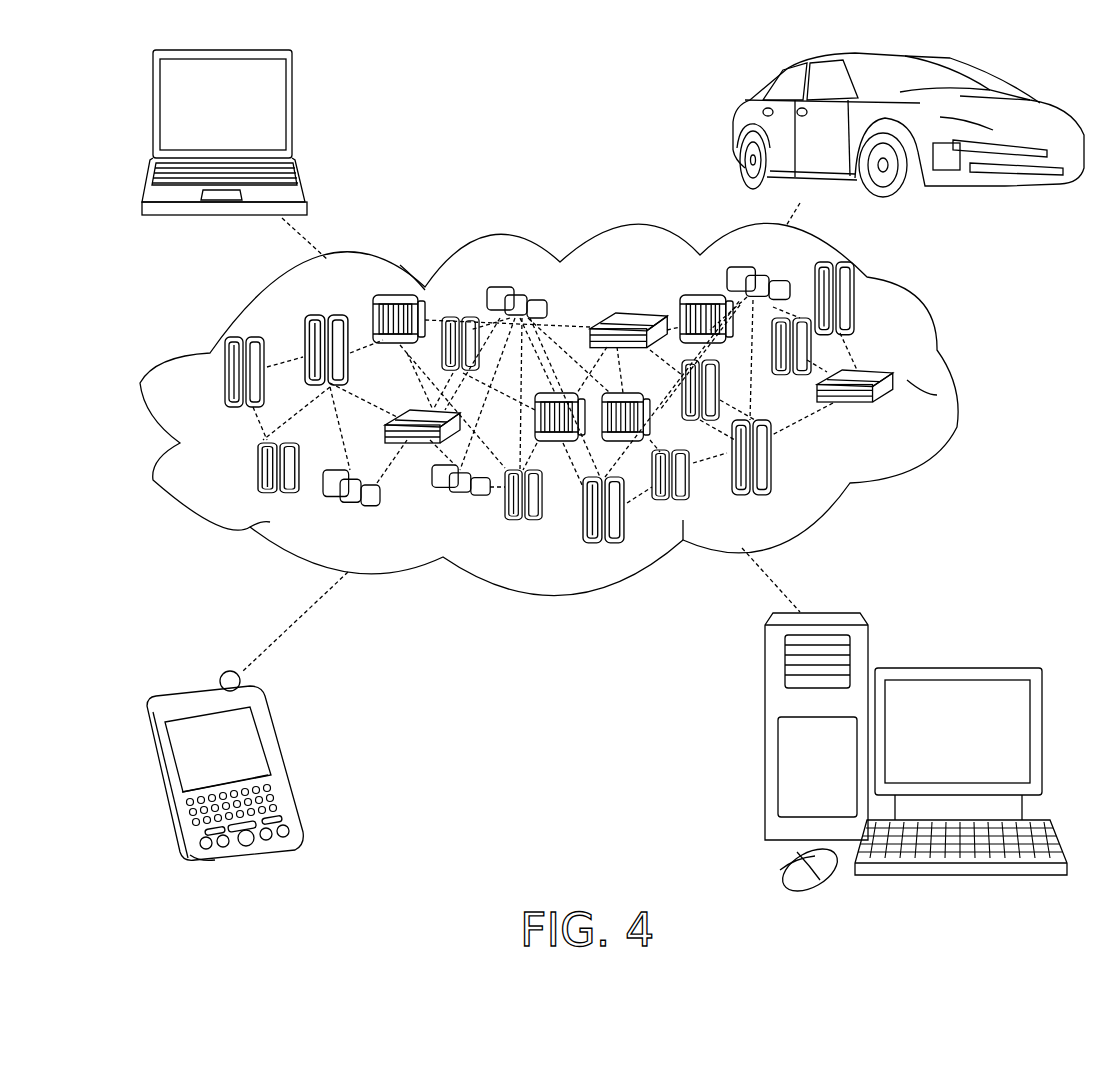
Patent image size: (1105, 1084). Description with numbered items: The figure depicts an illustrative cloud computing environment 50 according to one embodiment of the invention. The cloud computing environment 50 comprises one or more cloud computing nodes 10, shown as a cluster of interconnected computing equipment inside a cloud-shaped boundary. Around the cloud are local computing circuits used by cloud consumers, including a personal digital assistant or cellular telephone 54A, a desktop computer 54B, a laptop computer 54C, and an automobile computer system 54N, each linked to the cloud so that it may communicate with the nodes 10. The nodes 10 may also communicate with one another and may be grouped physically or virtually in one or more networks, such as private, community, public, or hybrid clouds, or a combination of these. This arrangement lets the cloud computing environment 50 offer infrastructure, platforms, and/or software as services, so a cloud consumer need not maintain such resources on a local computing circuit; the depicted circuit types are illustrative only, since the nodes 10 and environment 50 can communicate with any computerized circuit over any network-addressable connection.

The cloud computing node 10 is at (900, 412).
The cloud computing environment 50 is at (958, 386).
The personal digital assistant or cellular telephone 54A is at (280, 762).
The desktop computer 54B is at (955, 668).
The laptop computer 54C is at (292, 112).
The automobile computer system 54N is at (737, 128).